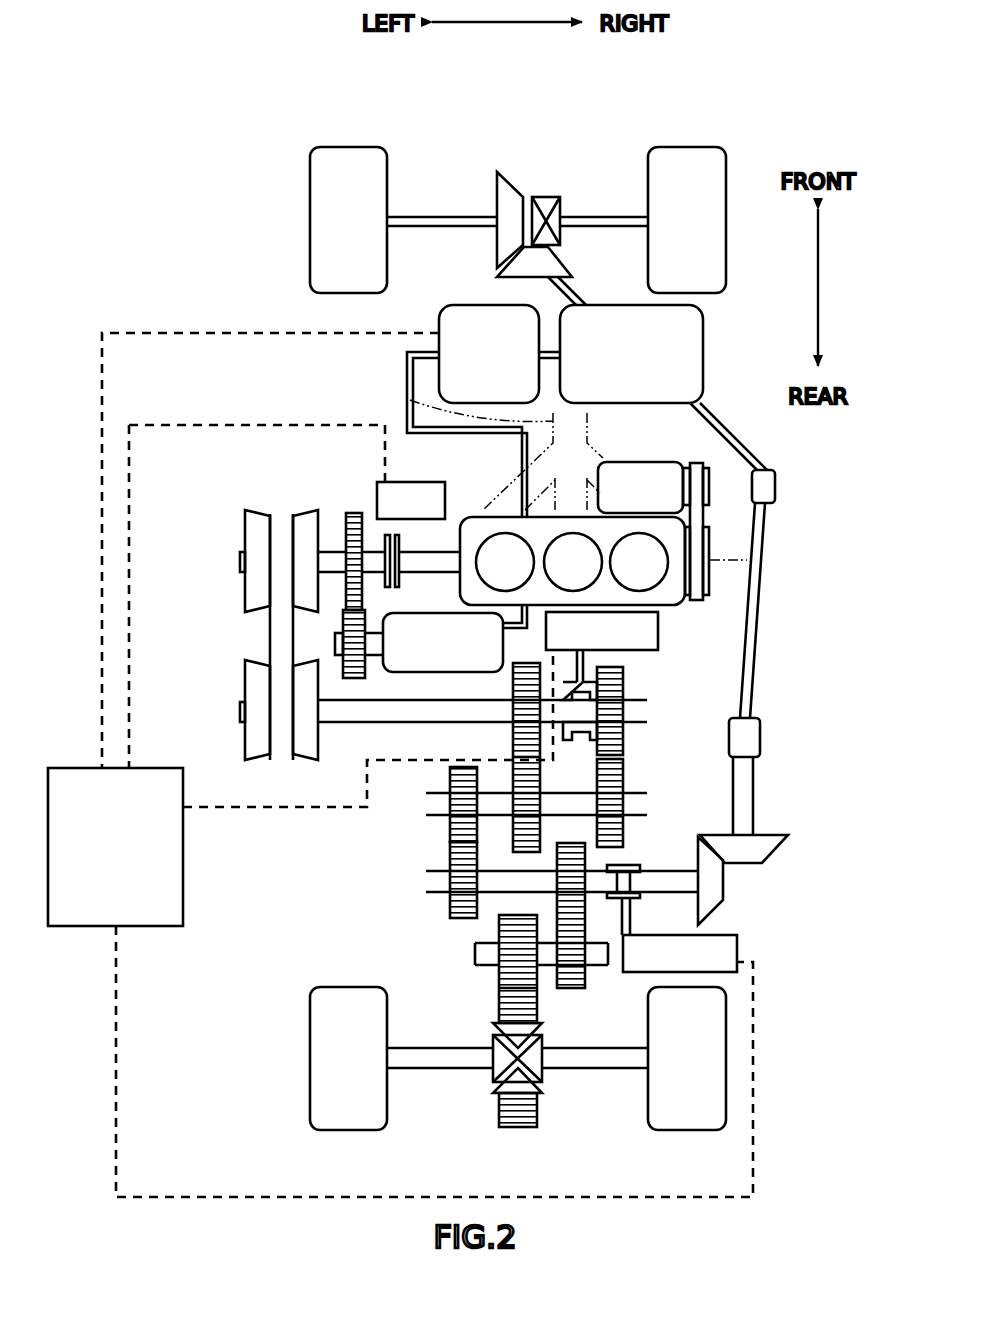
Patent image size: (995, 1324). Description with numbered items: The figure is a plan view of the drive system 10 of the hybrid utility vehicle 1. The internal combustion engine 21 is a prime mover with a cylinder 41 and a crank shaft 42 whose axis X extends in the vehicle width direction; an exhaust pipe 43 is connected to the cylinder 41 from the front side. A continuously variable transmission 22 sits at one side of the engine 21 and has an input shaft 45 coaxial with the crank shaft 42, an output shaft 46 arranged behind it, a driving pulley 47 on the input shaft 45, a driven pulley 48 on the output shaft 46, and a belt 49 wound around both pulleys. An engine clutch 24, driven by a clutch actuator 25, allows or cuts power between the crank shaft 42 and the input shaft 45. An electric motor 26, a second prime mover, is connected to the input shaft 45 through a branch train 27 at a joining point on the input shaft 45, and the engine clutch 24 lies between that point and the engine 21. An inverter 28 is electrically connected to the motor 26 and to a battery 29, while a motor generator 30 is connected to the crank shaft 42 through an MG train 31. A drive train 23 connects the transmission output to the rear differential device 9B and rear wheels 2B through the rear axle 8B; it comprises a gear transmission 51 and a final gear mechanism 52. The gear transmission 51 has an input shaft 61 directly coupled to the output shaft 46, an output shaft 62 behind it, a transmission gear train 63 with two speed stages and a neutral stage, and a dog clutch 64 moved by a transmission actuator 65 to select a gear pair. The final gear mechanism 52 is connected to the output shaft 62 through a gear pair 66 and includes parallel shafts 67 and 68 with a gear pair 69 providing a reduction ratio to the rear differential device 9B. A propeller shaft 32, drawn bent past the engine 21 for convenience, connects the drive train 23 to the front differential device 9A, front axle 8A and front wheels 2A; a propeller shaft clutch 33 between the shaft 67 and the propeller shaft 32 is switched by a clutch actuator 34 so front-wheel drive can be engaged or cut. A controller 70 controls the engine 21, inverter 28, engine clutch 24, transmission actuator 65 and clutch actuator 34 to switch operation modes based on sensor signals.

The hybrid utility vehicle 1 is at (240, 133).
The drive system 10 is at (232, 325).
The front wheels 2A is at (348, 147).
The rear wheels 2B is at (347, 1130).
The front axle 8A is at (445, 216).
The rear axle 8B is at (440, 1068).
The front differential device 9A is at (556, 198).
The rear differential device 9B is at (540, 1085).
The internal combustion engine 21 is at (688, 562).
The continuously variable transmission 22 is at (258, 599).
The drive train 23 is at (492, 825).
The engine clutch 24 is at (392, 537).
The clutch actuator 25 is at (397, 481).
The electric motor 26 is at (435, 613).
The branch train 27 is at (364, 668).
The inverter 28 is at (439, 322).
The battery 29 is at (703, 330).
The motor generator 30 is at (640, 462).
The MG train 31 is at (695, 463).
The propeller shaft 32 is at (758, 630).
The propeller shaft clutch 33 is at (640, 898).
The clutch actuator 34 is at (737, 950).
The cylinder 41 is at (565, 517).
The crank shaft 42 is at (455, 517).
The exhaust pipe 43 is at (410, 400).
The input shaft 45 is at (333, 549).
The output shaft 46 is at (342, 722).
The driving pulley 47 is at (245, 540).
The driven pulley 48 is at (245, 690).
The belt 49 is at (270, 640).
The gear transmission 51 is at (475, 745).
The final gear mechanism 52 is at (510, 903).
The input shaft 61 is at (647, 710).
The output shaft 62 is at (647, 805).
The transmission gear train 63 is at (623, 748).
The dog clutch 64 is at (568, 742).
The transmission actuator 65 is at (658, 628).
The gear pair 66 is at (450, 833).
The shaft 67 is at (426, 882).
The shaft 68 is at (475, 953).
The gear pair 69 is at (570, 988).
The controller 70 is at (75, 768).
The axis X is at (728, 556).